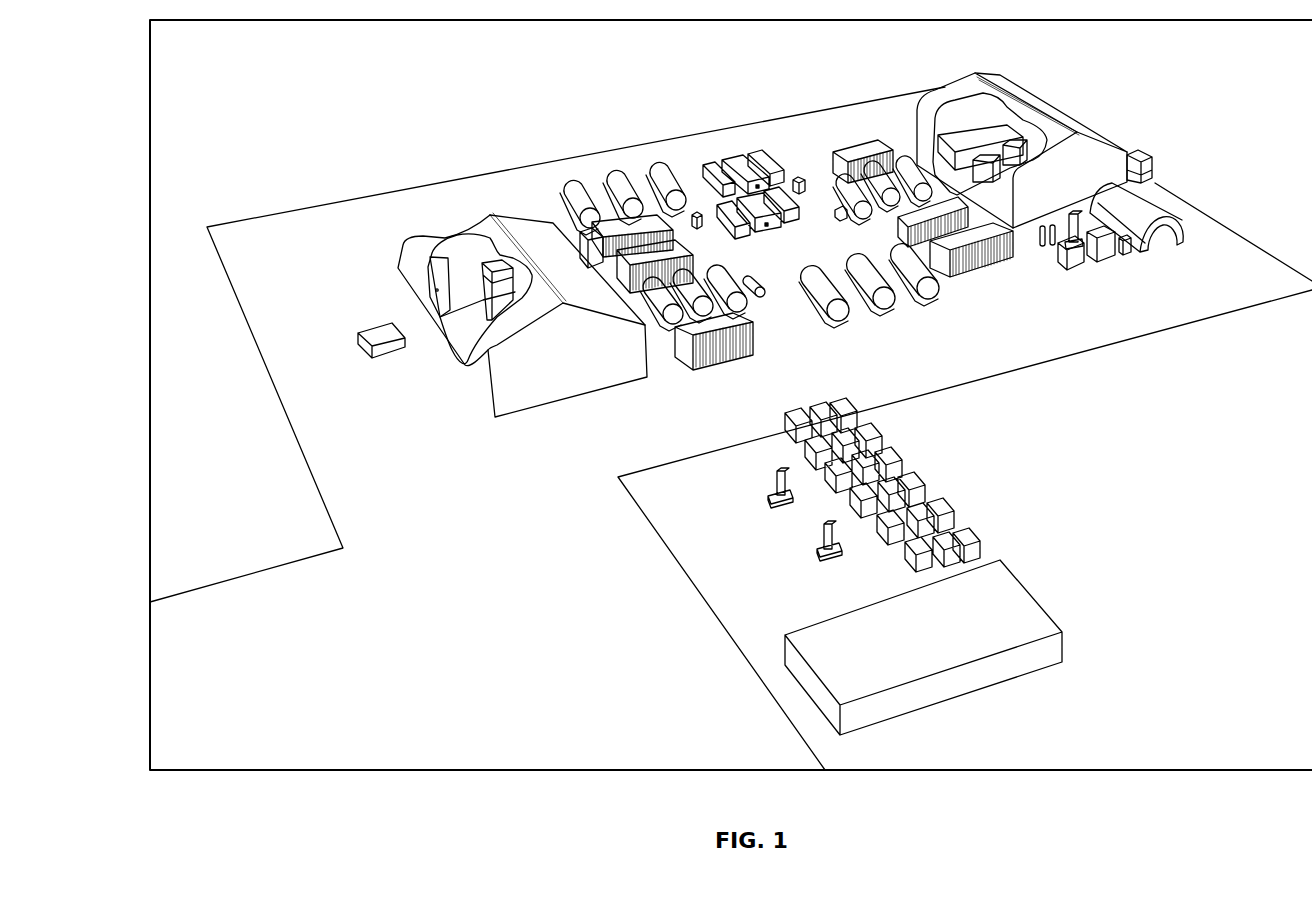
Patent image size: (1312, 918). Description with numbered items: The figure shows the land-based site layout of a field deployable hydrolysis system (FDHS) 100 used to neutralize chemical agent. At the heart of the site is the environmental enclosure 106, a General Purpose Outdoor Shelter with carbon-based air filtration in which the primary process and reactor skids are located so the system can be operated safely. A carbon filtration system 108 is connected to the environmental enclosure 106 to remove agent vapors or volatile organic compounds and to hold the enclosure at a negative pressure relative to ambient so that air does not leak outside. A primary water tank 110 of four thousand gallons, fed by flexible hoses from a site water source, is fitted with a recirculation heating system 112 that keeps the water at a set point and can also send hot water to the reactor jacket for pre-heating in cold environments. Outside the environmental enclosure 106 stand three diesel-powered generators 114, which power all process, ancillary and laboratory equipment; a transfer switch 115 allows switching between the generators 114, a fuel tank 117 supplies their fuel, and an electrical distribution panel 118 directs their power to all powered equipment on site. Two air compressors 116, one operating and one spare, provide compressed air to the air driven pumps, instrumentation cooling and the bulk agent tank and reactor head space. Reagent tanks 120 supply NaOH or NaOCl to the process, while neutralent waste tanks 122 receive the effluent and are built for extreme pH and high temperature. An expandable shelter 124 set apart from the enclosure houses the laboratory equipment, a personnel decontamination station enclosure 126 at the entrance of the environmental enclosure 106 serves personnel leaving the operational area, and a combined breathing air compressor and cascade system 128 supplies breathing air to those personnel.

The field deployable hydrolysis system (FDHS) 100 is at (1047, 125).
The environmental enclosure 106 is at (1158, 173).
The carbon filtration system 108 is at (853, 150).
The primary water tank 110 is at (937, 303).
The recirculation heating system 112 is at (995, 268).
The diesel-powered generators 114 is at (880, 452).
The transfer switch 115 is at (768, 495).
The air compressors 116 is at (1080, 258).
The fuel tank 117 is at (1033, 618).
The electrical distribution panel 118 is at (1148, 160).
The reagent tanks 120 is at (890, 312).
The neutralent waste tanks 122 is at (840, 198).
The expandable shelter 124 is at (712, 165).
The personnel decontamination station (PDS) enclosure 126 is at (1143, 208).
The combined breathing air compressor and cascade system 128 is at (945, 197).